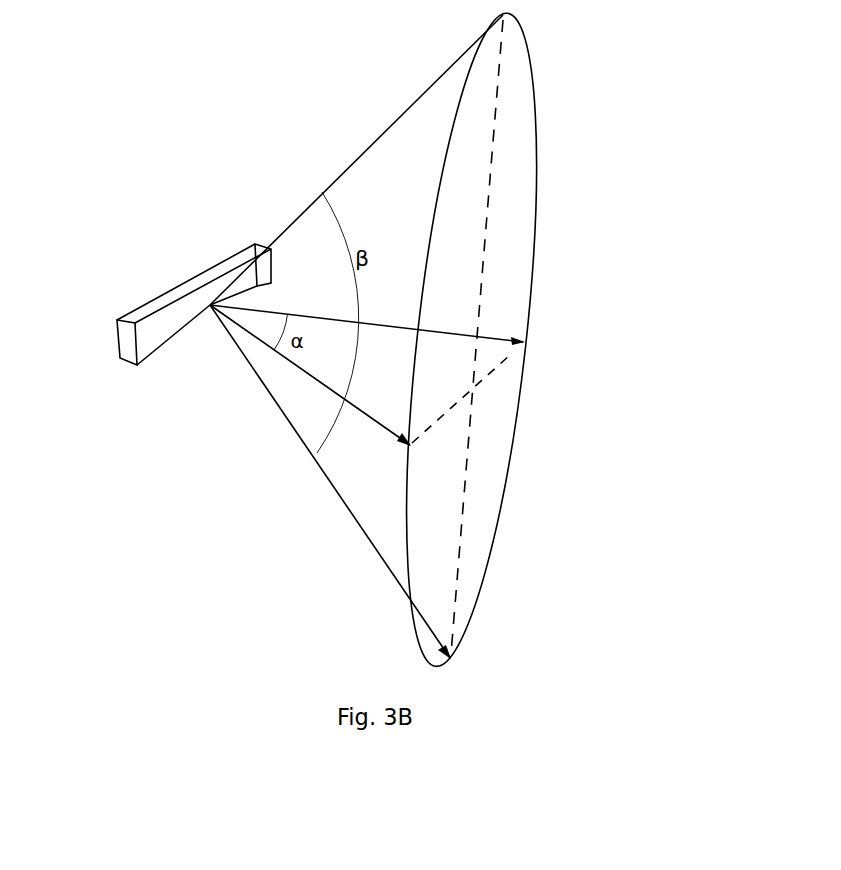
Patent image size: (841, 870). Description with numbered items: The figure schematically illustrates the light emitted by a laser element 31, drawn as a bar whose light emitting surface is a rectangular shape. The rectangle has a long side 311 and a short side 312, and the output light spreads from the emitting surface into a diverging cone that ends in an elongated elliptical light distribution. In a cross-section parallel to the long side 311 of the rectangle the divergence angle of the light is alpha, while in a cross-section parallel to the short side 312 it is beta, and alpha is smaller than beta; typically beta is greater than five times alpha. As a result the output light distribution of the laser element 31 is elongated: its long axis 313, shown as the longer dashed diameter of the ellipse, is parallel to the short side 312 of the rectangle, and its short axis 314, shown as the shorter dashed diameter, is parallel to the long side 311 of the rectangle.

The laser element 31 is at (135, 300).
The long side 311 is at (183, 297).
The short side 312 is at (135, 342).
The long axis 313 is at (483, 235).
The short axis 314 is at (510, 360).